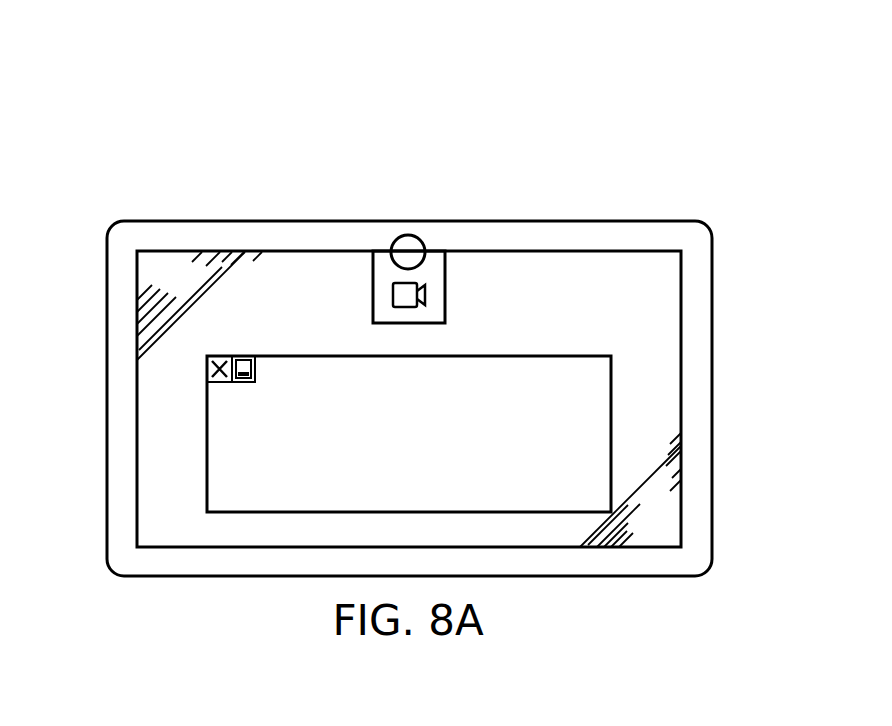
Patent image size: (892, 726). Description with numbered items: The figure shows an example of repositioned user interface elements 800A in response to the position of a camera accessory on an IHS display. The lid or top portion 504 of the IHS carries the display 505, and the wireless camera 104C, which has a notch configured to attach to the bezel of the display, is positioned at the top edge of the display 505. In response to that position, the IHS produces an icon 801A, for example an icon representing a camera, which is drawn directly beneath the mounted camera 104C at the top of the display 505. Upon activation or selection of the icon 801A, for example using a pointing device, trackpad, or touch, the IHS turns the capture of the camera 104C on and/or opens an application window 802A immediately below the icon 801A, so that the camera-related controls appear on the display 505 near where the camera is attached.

The user interface 800A is at (250, 110).
The top portion 504 is at (137, 280).
The display 505 is at (657, 297).
The wireless camera 104C is at (406, 235).
The icon 801A is at (373, 290).
The application window 802A is at (527, 356).